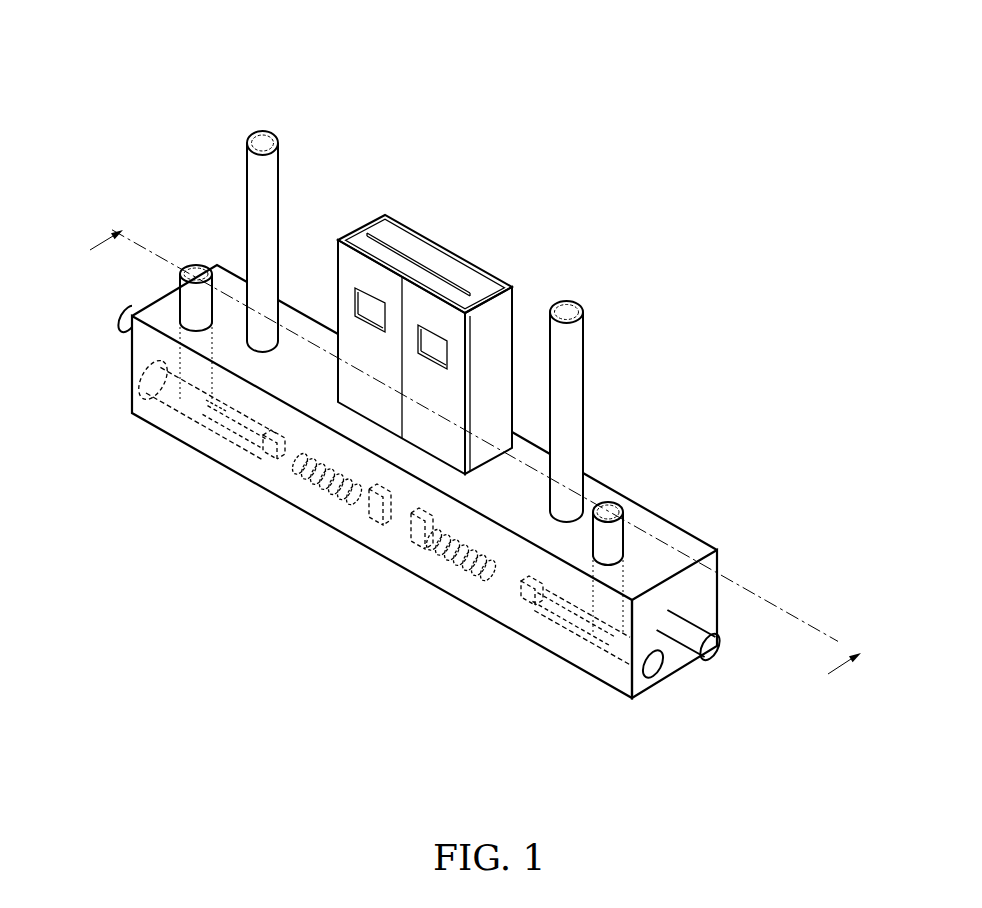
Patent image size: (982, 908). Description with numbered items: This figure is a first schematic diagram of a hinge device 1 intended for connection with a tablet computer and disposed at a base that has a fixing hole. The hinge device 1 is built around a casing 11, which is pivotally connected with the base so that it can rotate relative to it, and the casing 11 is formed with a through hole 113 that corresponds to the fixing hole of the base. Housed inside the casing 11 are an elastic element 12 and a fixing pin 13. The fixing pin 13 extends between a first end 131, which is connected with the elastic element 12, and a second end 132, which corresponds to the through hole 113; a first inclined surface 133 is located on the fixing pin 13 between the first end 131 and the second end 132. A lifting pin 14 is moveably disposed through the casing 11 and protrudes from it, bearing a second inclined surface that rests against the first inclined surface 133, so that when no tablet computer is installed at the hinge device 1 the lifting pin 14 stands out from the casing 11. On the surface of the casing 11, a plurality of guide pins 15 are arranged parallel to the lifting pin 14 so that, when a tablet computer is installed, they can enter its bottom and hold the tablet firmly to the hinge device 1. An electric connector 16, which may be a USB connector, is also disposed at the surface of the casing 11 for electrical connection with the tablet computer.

The hinge device 1 is at (118, 124).
The casing 11 is at (130, 368).
The through hole 113 is at (675, 679).
The elastic element 12 is at (320, 478).
The fixing pin 13 is at (203, 428).
The first end 131 is at (260, 450).
The second end 132 is at (150, 398).
The first inclined surface 133 is at (221, 402).
The lifting pin 14 is at (232, 341).
The guide pins 15 is at (278, 142).
The electric connector 16 is at (456, 254).